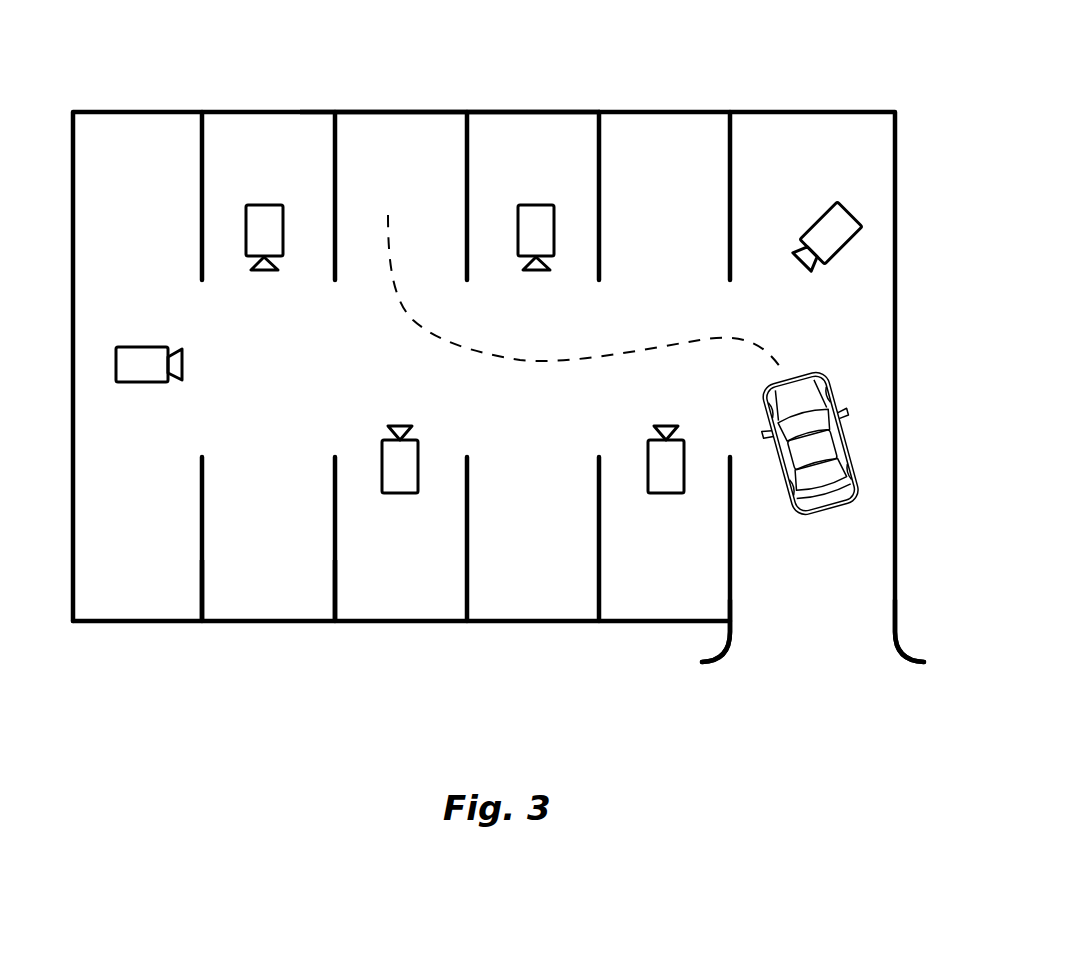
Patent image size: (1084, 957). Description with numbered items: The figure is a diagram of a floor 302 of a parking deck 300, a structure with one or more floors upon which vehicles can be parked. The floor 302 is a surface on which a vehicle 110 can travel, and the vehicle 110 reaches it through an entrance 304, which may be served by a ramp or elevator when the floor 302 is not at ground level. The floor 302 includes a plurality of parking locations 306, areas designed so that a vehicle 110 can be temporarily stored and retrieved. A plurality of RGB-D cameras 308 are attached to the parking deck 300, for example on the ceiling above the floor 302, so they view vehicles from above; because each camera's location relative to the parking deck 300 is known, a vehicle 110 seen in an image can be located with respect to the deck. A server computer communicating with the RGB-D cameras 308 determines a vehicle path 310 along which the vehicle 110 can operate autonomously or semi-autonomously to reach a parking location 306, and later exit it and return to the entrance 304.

The parking deck 300 is at (795, 112).
The floor 302 is at (566, 416).
The entrance 304 is at (790, 698).
The parking locations 306 is at (396, 72).
The RGB-D cameras 308 is at (333, 668).
The vehicle path 310 is at (457, 343).
The vehicle 110 is at (797, 368).